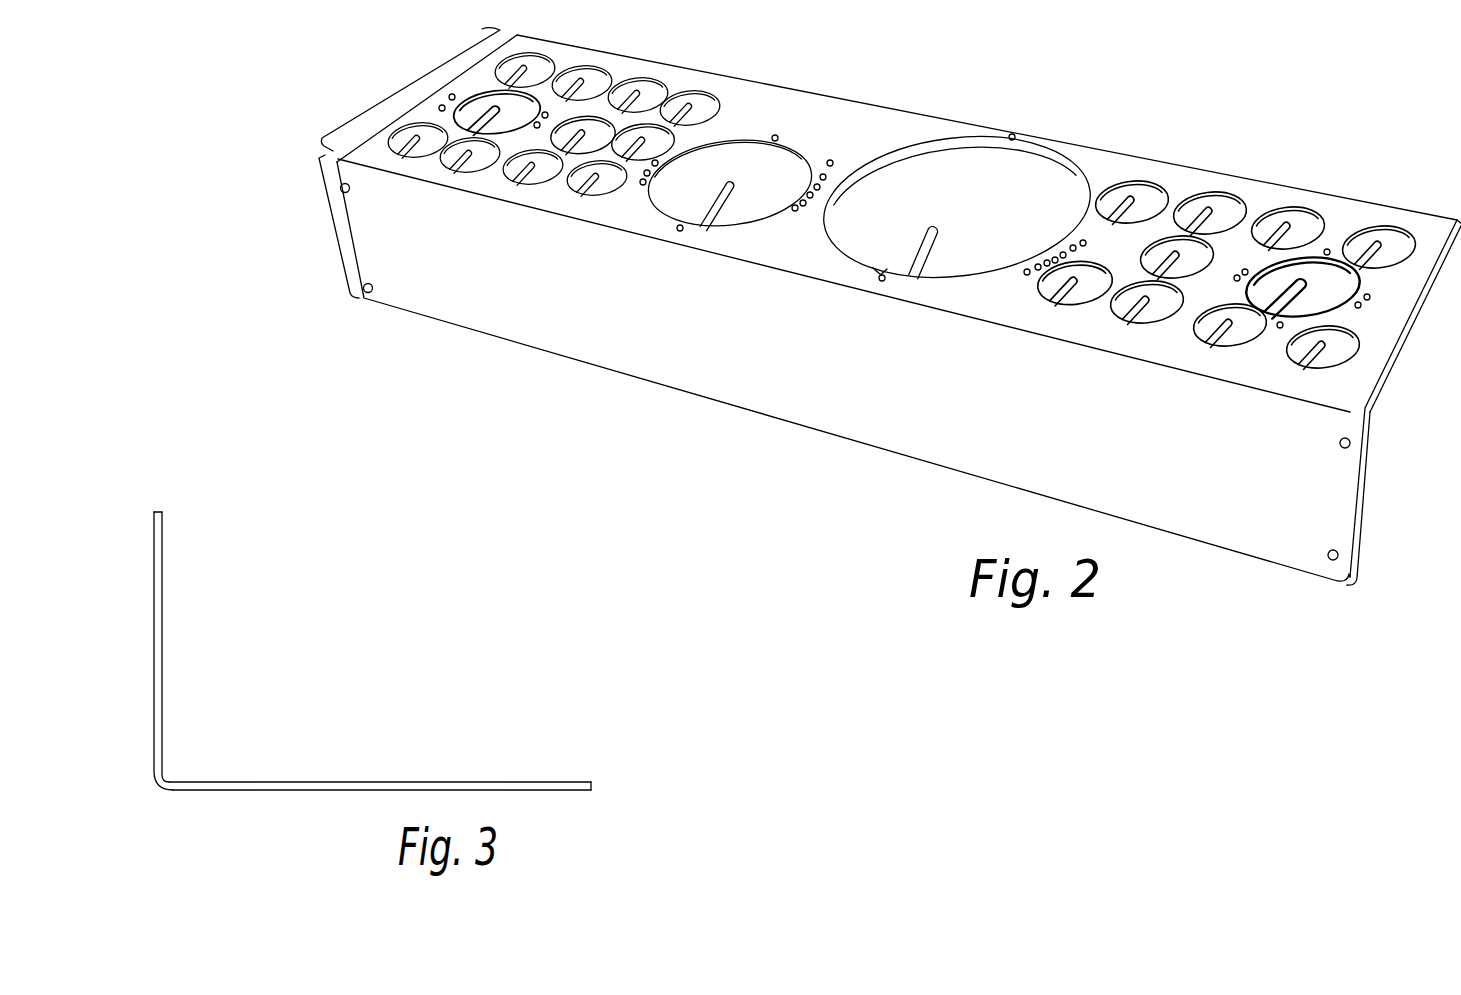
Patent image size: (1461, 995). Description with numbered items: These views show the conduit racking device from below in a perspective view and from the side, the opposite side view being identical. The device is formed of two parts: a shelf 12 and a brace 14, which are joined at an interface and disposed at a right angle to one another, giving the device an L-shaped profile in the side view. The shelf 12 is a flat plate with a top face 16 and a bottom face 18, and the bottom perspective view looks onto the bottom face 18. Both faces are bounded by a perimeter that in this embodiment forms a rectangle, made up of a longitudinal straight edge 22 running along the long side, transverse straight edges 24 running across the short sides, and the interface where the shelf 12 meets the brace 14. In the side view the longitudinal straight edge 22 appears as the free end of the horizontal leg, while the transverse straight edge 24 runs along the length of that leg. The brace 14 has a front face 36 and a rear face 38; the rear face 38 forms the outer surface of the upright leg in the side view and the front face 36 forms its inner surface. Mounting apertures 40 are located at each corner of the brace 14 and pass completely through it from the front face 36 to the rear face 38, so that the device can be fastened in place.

In FIG. 2, the shelf 12 is at (401, 84).
In FIG. 2, the brace 14 is at (328, 222).
In FIG. 3, the top face 16 is at (389, 764).
In FIG. 2, the bottom face 18 is at (890, 118).
In FIG. 3, the bottom face 18 is at (274, 797).
In FIG. 3, the longitudinal straight edge 22 is at (591, 789).
In FIG. 3, the transverse straight edge 24 is at (461, 782).
In FIG. 3, the front face 36 is at (170, 600).
In FIG. 2, the rear face 38 is at (886, 373).
In FIG. 3, the rear face 38 is at (143, 592).
In FIG. 2, the mounting apertures 40 is at (349, 192).